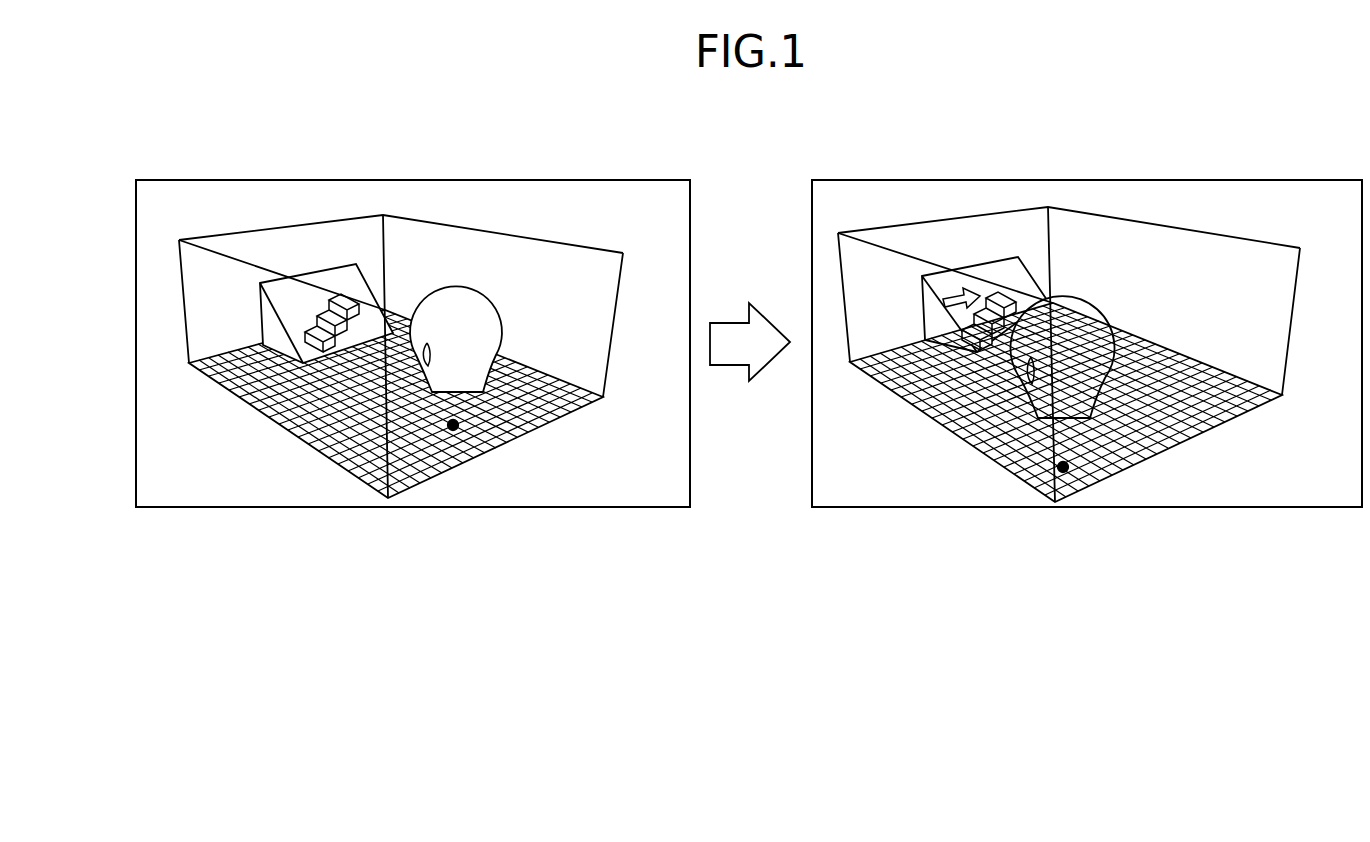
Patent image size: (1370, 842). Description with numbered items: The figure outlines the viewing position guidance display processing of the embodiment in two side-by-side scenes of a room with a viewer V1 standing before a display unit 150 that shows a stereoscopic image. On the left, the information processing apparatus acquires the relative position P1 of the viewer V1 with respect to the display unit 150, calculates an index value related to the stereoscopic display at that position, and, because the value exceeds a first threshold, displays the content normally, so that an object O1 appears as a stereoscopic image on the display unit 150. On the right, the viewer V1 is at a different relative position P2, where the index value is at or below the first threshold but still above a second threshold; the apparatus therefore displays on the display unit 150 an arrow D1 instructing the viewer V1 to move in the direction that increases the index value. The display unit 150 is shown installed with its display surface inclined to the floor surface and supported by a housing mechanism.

The display unit 150 is at (253, 330).
The object O1 is at (332, 303).
The viewer V1 is at (478, 338).
The relative position P1 is at (452, 357).
The relative position P2 is at (1065, 390).
The arrow D1 is at (947, 297).